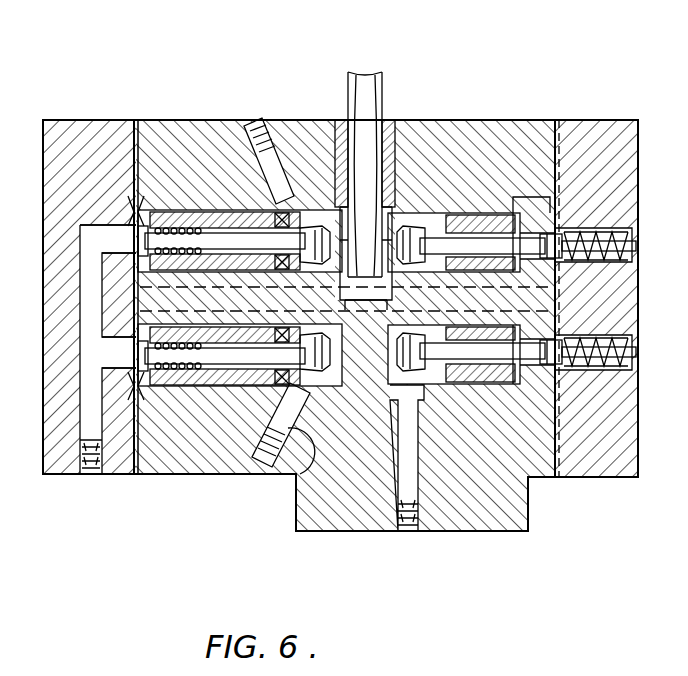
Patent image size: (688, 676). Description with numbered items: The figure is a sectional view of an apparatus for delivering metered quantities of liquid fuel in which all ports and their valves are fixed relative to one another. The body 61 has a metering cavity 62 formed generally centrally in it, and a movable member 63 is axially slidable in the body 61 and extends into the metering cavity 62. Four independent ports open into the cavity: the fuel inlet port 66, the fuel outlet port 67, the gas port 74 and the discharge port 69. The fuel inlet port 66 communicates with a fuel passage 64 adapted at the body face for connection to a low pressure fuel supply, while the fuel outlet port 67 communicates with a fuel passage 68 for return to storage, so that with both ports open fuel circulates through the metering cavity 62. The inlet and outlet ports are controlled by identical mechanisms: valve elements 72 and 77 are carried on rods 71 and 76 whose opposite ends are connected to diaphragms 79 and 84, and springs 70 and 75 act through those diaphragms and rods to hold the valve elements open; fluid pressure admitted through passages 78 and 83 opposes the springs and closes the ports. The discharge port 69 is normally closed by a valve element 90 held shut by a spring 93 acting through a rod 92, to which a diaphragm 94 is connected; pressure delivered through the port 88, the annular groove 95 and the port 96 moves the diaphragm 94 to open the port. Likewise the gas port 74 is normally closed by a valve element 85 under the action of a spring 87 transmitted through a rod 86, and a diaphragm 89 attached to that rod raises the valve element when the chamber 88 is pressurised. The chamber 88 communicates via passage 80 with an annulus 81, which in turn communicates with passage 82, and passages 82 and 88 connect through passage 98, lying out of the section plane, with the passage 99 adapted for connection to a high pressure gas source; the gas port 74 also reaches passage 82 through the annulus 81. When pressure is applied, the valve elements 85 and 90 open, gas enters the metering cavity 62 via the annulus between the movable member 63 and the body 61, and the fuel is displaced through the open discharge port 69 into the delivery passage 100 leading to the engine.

The body 61 is at (178, 132).
The metering cavity 62 is at (342, 302).
The movable member 63 is at (368, 70).
The fuel passage 64 is at (300, 484).
The fuel inlet port 66 is at (348, 445).
The fuel outlet port 67 is at (344, 122).
The fuel passage 68 is at (282, 160).
The discharge port 69 is at (392, 302).
The spring 70 is at (171, 445).
The rod 71 is at (210, 455).
The valve element 72 is at (242, 445).
The gas port 74 is at (385, 165).
The spring 75 is at (157, 214).
The rod 76 is at (204, 228).
The valve element 77 is at (318, 232).
The passage 78 is at (104, 351).
The diaphragm 79 is at (120, 474).
The passage 80 is at (592, 246).
The annulus 81 is at (466, 230).
The passage 82 is at (603, 262).
The passage 83 is at (122, 248).
The diaphragm 84 is at (128, 236).
The valve element 85 is at (413, 242).
The rod 86 is at (446, 242).
The spring 87 is at (603, 232).
The chamber 88 is at (550, 226).
The diaphragm 89 is at (571, 213).
The valve element 90 is at (450, 384).
The rod 92 is at (535, 482).
The spring 93 is at (612, 372).
The diaphragm 94 is at (572, 388).
The annular groove 95 is at (604, 340).
The port 96 is at (586, 354).
The passage 98 is at (228, 285).
The passage 99 is at (88, 474).
The delivery passage 100 is at (412, 470).